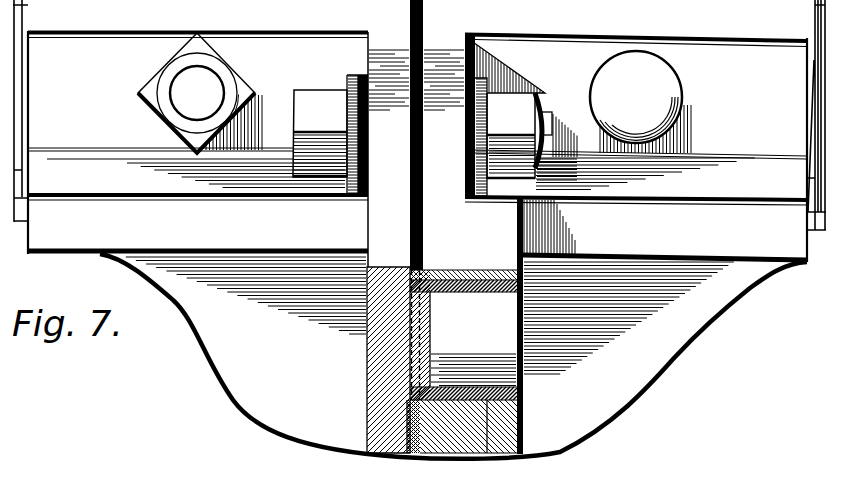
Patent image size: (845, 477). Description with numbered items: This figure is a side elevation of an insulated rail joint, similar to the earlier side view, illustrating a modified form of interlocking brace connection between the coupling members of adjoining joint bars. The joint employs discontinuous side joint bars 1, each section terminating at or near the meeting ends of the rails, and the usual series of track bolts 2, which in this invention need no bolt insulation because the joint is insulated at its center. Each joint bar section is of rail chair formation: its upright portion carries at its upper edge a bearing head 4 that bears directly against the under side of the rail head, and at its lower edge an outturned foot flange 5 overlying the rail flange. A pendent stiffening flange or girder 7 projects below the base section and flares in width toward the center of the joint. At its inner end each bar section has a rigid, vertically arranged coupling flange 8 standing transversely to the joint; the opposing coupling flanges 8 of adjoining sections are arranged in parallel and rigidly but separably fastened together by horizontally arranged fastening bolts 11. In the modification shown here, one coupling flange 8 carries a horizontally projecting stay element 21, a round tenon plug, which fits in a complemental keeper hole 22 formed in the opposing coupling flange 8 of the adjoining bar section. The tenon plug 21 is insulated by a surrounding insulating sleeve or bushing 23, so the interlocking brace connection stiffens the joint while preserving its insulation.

The side joint bar 1 is at (417, 146).
The track bolt 2 is at (414, 93).
The bearing head 4 is at (417, 25).
The foot flange 5 is at (417, 181).
The stiffening flange or girder 7 is at (453, 356).
The coupling flange 8 is at (416, 151).
The fastening bolt 11 is at (339, 107).
The stay element 21 is at (473, 339).
The keeper hole 22 is at (482, 279).
The insulating sleeve or bushing 23 is at (450, 287).